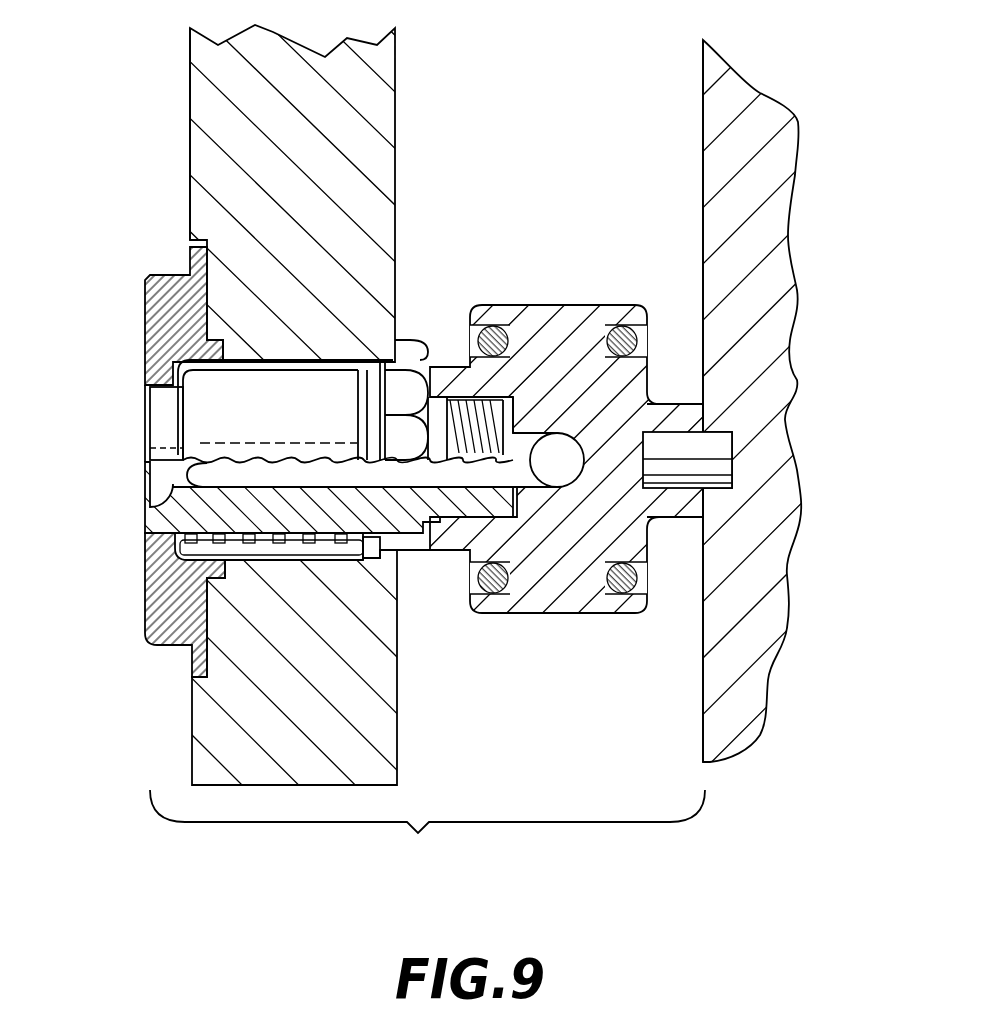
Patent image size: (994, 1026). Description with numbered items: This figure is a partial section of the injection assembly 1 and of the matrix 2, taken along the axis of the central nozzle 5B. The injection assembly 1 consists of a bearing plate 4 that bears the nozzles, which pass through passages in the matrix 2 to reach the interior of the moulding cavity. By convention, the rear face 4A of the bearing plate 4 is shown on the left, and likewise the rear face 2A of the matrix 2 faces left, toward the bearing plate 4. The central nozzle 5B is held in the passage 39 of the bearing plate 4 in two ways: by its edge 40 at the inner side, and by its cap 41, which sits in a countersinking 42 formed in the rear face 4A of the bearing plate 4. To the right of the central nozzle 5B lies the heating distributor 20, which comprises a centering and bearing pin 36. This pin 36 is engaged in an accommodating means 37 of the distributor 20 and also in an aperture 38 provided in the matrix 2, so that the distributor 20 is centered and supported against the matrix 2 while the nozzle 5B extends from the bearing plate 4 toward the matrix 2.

The injection assembly 1 is at (427, 836).
The matrix 2 is at (768, 623).
The rear face of the matrix 2A is at (703, 108).
The bearing plate 4 is at (205, 92).
The rear face of the bearing plate 4A is at (190, 183).
The central nozzle 5B is at (190, 418).
The heating distributor 20 is at (655, 378).
The centering and bearing pin 36 is at (715, 450).
The accommodating means 37 is at (690, 413).
The aperture 38 is at (715, 497).
The passage 39 is at (337, 360).
The edge 40 is at (380, 365).
The cap 41 is at (155, 583).
The countersinking 42 is at (207, 723).